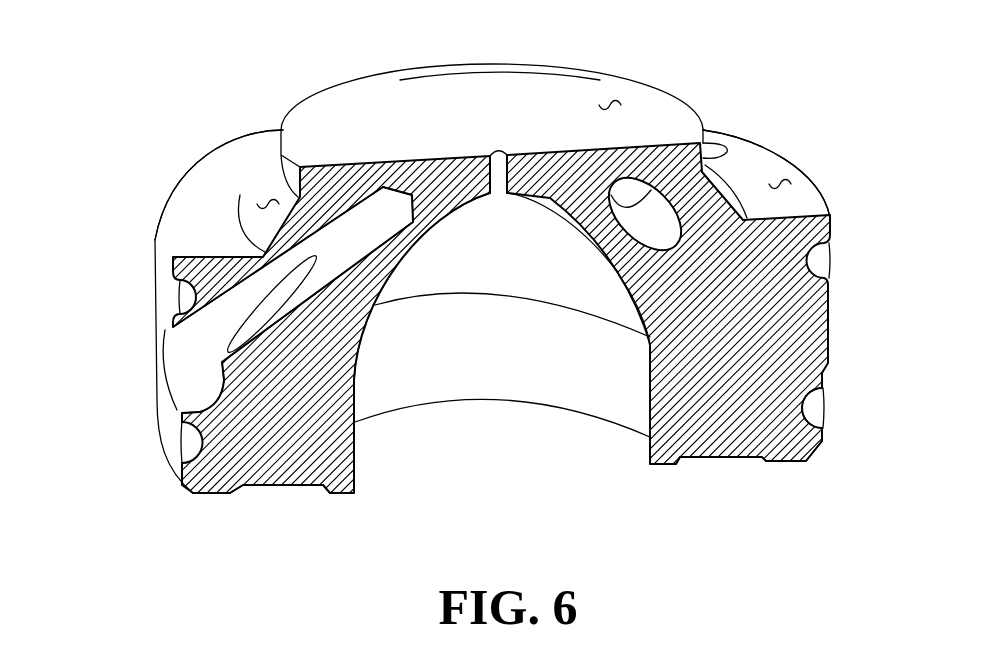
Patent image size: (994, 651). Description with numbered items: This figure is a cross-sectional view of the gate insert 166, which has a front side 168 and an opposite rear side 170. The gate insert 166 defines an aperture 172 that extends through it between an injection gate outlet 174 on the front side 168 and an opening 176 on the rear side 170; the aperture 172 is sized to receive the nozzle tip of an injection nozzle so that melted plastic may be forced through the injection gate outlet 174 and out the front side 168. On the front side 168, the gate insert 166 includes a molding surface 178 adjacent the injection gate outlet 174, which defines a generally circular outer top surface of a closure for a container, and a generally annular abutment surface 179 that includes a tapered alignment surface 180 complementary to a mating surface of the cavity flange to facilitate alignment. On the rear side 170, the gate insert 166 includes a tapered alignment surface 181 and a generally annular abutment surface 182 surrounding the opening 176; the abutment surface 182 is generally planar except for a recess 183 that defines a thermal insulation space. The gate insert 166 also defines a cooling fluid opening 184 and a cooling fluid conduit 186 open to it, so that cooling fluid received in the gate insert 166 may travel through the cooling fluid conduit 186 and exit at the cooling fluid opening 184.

The gate insert 166 is at (365, 118).
The front side 168 is at (463, 78).
The rear side 170 is at (661, 480).
The aperture 172 is at (503, 437).
The injection gate outlet 174 is at (500, 130).
The opening 176 is at (581, 465).
The molding surface 178 is at (612, 100).
The abutment surface 179 is at (781, 181).
The tapered alignment surface 180 is at (268, 198).
The tapered alignment surface 181 is at (812, 456).
The abutment surface 182 is at (344, 492).
The recess 183 is at (281, 500).
The cooling fluid opening 184 is at (180, 378).
The cooling fluid conduit 186 is at (351, 257).